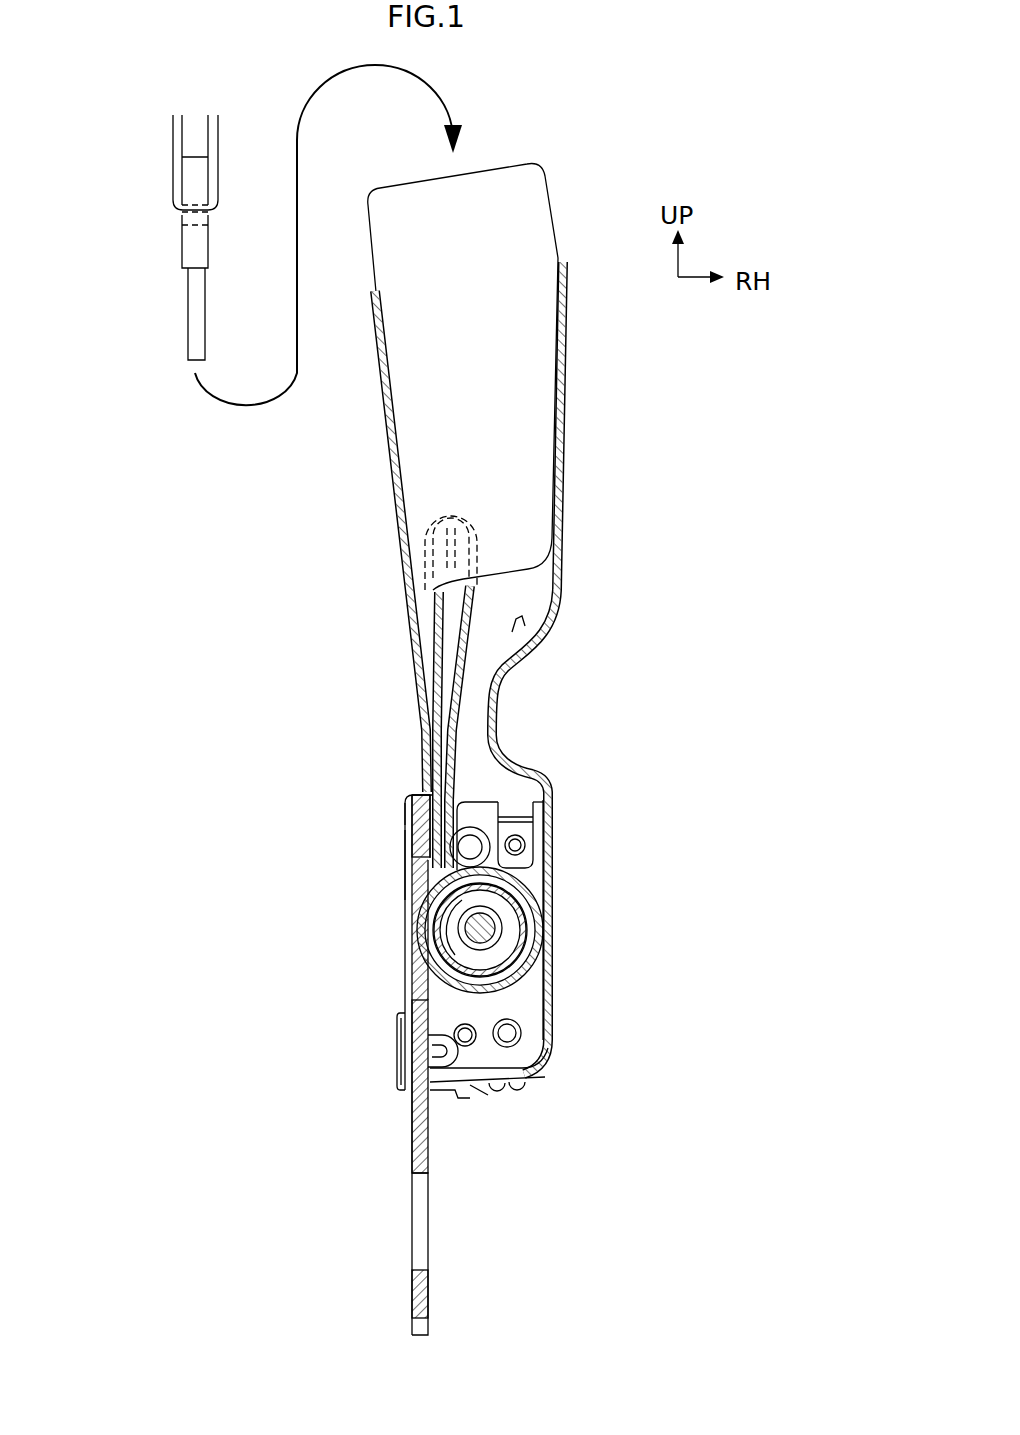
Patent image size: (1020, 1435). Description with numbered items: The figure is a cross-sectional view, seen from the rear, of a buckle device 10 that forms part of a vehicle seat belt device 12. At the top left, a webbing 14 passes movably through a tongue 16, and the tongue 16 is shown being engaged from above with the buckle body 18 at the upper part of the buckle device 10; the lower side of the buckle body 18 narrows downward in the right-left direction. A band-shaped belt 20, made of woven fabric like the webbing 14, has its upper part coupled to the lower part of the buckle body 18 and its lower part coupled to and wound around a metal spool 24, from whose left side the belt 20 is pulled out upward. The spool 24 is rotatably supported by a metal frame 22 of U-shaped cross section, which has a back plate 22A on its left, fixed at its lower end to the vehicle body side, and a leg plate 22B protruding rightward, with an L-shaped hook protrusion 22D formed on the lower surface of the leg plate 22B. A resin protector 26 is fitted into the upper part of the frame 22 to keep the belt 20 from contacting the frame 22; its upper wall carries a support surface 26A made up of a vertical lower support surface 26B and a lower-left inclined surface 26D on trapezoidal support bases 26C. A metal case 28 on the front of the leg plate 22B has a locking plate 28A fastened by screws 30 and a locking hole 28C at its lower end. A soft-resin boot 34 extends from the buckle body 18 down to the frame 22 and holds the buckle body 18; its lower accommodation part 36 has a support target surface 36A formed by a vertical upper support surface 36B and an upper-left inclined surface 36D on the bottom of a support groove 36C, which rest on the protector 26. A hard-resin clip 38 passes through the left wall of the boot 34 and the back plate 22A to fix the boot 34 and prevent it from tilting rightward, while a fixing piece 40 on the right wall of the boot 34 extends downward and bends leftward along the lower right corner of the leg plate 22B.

The buckle device 10 is at (617, 145).
The seat belt device 12 is at (486, 713).
The webbing 14 is at (173, 129).
The tongue 16 is at (182, 247).
The buckle body 18 is at (548, 206).
The belt 20 is at (466, 708).
The frame 22 is at (413, 1288).
The back plate 22A is at (413, 1138).
The leg plate 22B is at (543, 957).
The hook protrusion 22D is at (497, 1091).
The spool 24 is at (531, 877).
The protector 26 is at (497, 804).
The support surface 26A is at (499, 750).
The lower support surface 26B is at (430, 792).
The support base 26C is at (408, 800).
The lower-left inclined surface 26D is at (419, 796).
The case 28 is at (539, 1103).
The locking plate 28A is at (521, 1094).
The locking hole 28C is at (465, 1093).
The screw 30 is at (527, 840).
The boot 34 is at (585, 419).
The accommodation part 36 is at (407, 917).
The support target surface 36A is at (499, 848).
The upper support surface 36B is at (404, 852).
The support groove 36C is at (410, 807).
The upper-left inclined surface 36D is at (404, 820).
The clip 38 is at (397, 1050).
The fixing piece 40 is at (543, 1060).